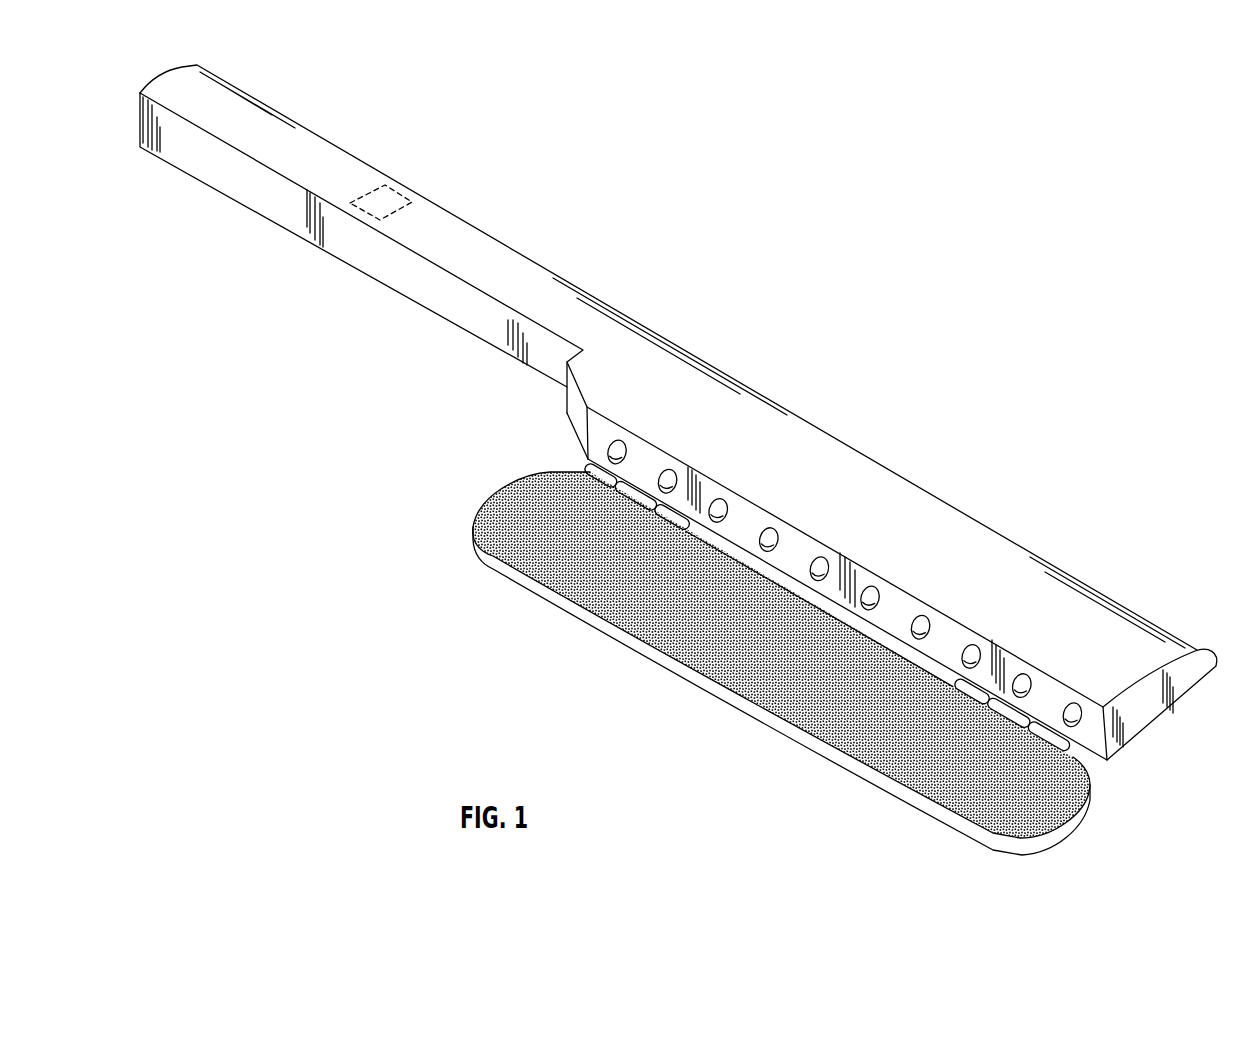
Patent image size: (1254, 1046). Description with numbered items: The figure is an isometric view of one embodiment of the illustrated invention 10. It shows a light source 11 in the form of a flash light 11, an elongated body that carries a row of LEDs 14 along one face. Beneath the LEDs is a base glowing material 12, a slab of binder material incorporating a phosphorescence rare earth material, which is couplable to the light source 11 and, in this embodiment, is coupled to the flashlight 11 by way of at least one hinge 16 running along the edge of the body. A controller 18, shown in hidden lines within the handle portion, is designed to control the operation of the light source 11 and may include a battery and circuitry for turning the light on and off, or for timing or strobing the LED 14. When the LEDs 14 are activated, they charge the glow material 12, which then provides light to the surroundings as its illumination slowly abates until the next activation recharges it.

The illustrated invention 10 is at (562, 210).
The light source 11 is at (783, 443).
The base glowing material 12 is at (436, 487).
The LEDs 14 is at (768, 532).
The hinge 16 is at (638, 497).
The controller 18 is at (393, 201).